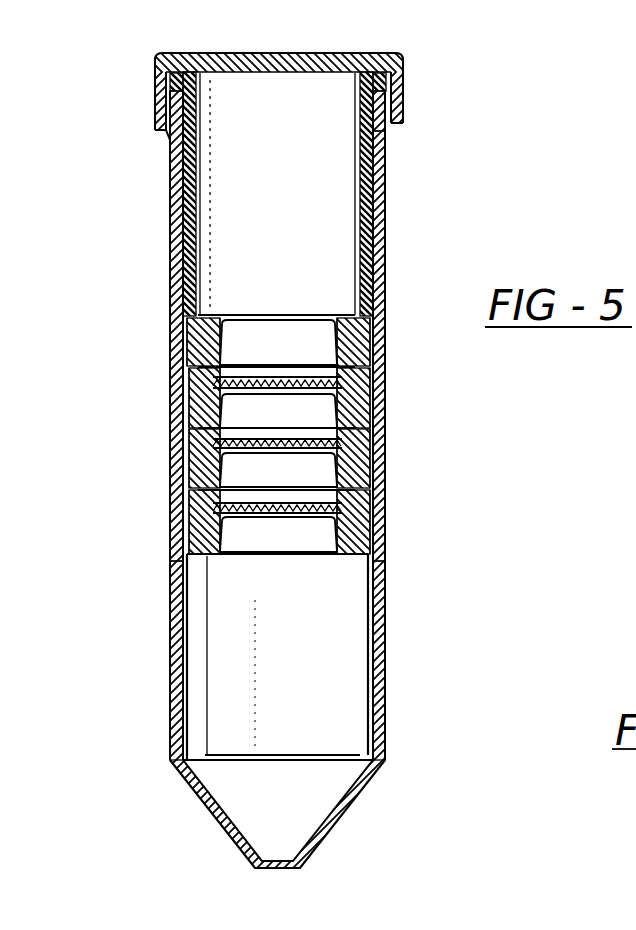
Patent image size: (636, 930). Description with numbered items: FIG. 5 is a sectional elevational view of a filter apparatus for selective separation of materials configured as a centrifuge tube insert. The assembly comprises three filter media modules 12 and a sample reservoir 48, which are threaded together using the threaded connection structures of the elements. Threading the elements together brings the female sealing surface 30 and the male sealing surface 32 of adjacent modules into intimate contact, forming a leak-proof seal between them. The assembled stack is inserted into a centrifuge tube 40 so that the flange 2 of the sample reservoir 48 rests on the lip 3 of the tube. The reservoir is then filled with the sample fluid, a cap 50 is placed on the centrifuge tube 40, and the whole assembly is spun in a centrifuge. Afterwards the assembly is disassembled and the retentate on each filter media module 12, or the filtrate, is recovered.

The flange 2 is at (403, 74).
The cap 50 is at (403, 84).
The lip 3 is at (400, 94).
The sample reservoir 48 is at (383, 217).
The centrifuge tube 40 is at (395, 658).
The male sealing surface 32 is at (375, 346).
The female sealing surface 30 is at (374, 419).
The filter media module 12 is at (392, 396).